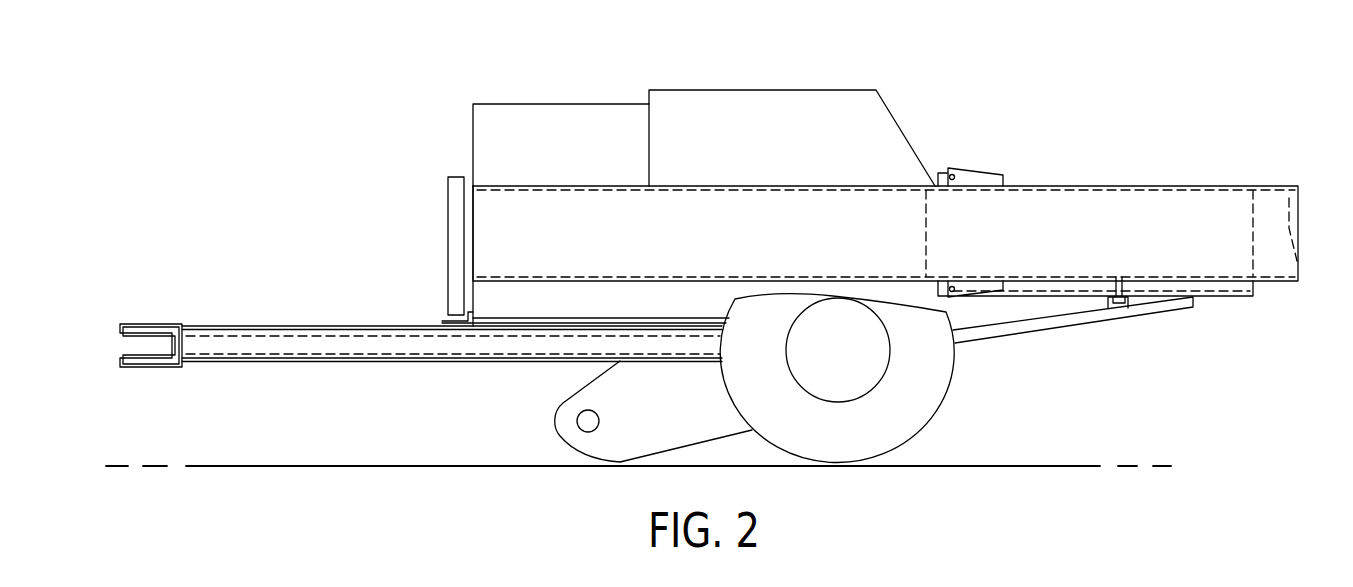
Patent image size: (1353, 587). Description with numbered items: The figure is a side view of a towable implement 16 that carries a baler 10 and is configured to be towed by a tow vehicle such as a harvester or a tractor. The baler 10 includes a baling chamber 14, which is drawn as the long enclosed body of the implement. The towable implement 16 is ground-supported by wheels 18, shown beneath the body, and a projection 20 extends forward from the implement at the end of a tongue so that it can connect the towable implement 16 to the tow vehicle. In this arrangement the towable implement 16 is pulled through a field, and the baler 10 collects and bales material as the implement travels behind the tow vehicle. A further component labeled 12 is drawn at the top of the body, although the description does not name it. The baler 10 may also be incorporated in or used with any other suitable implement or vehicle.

The baler 10 is at (1093, 151).
The hinge 12 is at (973, 185).
The baling chamber 14 is at (1114, 243).
The towable implement 16 is at (810, 60).
The wheels 18 is at (913, 407).
The projection 20 is at (148, 367).